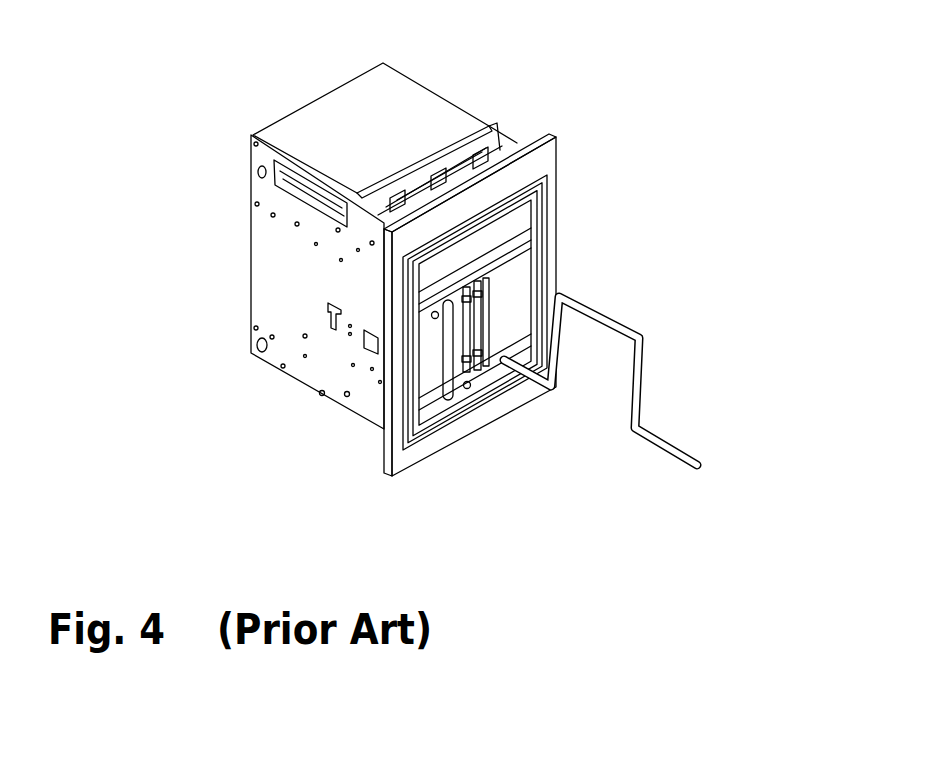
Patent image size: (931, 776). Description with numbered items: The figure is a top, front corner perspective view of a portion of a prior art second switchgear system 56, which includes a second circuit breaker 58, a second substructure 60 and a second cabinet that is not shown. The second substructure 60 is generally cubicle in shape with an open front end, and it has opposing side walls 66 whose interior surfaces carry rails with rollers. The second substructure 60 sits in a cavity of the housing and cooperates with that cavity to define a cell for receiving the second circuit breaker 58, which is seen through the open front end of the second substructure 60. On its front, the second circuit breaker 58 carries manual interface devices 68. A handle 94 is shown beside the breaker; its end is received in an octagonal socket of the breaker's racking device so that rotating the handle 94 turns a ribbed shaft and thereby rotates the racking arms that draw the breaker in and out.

The second switchgear system 56 is at (458, 257).
The second circuit breaker 58 is at (503, 230).
The second substructure 60 is at (273, 255).
The side walls 66 is at (278, 305).
The manual interface devices 68 is at (487, 318).
The handle 94 is at (640, 373).